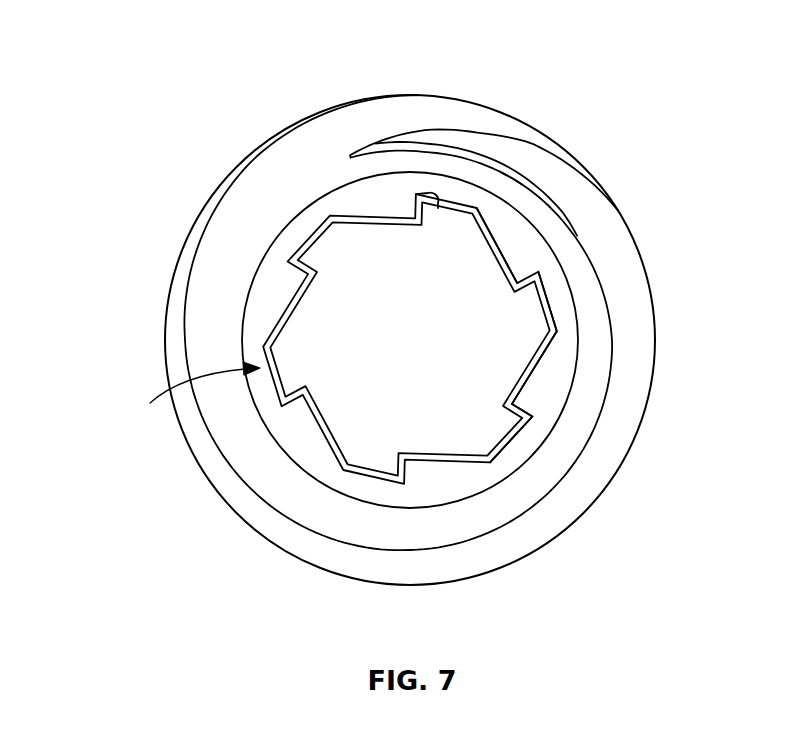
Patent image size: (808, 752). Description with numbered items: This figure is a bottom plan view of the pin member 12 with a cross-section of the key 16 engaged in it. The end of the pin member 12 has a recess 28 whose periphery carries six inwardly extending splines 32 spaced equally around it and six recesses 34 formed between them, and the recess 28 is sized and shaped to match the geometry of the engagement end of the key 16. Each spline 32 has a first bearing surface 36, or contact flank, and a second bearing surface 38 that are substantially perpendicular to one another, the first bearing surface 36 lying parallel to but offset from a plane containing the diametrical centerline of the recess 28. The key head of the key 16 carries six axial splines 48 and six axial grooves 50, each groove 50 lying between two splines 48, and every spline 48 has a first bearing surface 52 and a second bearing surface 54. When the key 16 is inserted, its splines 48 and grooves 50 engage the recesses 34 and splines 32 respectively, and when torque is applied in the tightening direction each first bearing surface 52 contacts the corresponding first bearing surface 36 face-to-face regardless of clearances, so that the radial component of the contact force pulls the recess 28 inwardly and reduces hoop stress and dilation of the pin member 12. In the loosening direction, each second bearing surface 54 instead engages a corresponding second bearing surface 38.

The pin member 12 is at (240, 197).
The key 16 is at (493, 292).
The recess 28 is at (182, 391).
The splines 32 is at (352, 192).
The recesses 34 is at (298, 245).
The first bearing surface 36 is at (453, 215).
The second bearing surface 38 is at (578, 345).
The splines 48 is at (490, 205).
The grooves 50 is at (535, 195).
The first bearing surface 52 is at (373, 195).
The second bearing surface 54 is at (537, 368).